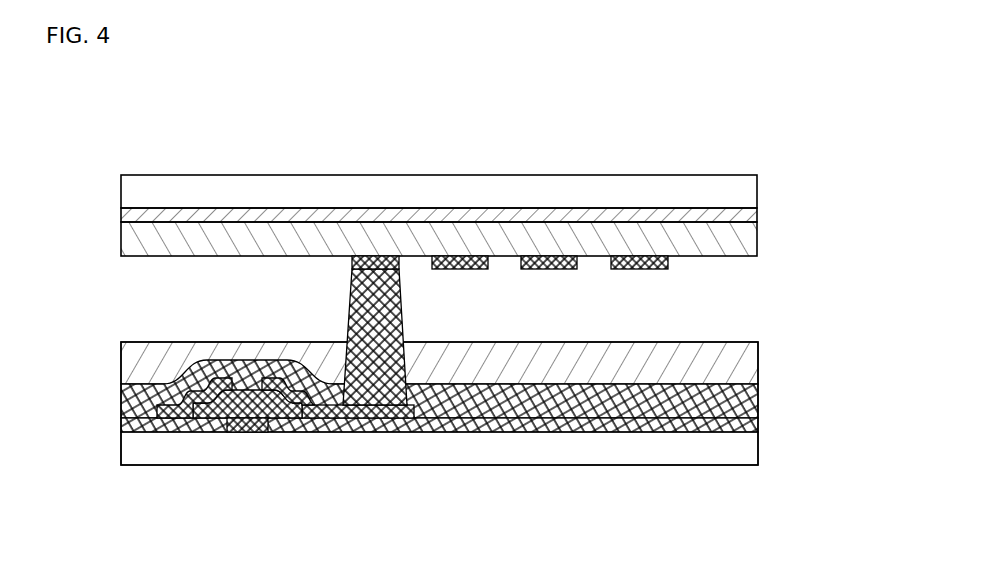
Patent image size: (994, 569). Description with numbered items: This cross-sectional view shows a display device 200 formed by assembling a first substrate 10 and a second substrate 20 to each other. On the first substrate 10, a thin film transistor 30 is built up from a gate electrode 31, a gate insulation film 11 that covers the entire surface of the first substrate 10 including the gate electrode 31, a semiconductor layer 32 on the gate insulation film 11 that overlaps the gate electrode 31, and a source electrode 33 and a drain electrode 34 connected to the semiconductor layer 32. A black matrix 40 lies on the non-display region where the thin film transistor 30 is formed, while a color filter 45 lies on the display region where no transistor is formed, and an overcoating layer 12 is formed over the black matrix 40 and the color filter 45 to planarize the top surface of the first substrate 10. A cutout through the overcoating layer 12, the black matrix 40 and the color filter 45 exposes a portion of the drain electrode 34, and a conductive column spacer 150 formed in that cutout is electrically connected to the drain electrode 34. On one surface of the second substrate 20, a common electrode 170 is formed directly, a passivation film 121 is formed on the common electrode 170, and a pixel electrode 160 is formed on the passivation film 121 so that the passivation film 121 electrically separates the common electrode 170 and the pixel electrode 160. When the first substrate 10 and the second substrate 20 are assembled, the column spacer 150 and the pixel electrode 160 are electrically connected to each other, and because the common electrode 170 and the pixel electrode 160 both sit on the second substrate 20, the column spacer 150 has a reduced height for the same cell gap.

The display device 200 is at (597, 106).
The second substrate 20 is at (752, 189).
The common electrode 170 is at (752, 213).
The passivation film 121 is at (752, 240).
The pixel electrode 160 is at (465, 263).
The column spacer 150 is at (356, 304).
The overcoating layer 12 is at (753, 363).
The color filter 45 is at (753, 401).
The gate insulation film 11 is at (753, 426).
The first substrate 10 is at (753, 452).
The black matrix 40 is at (441, 449).
The thin film transistor 30 is at (285, 467).
The gate electrode 31 is at (247, 468).
The semiconductor layer 32 is at (295, 412).
The source electrode 33 is at (180, 412).
The drain electrode 34 is at (360, 412).